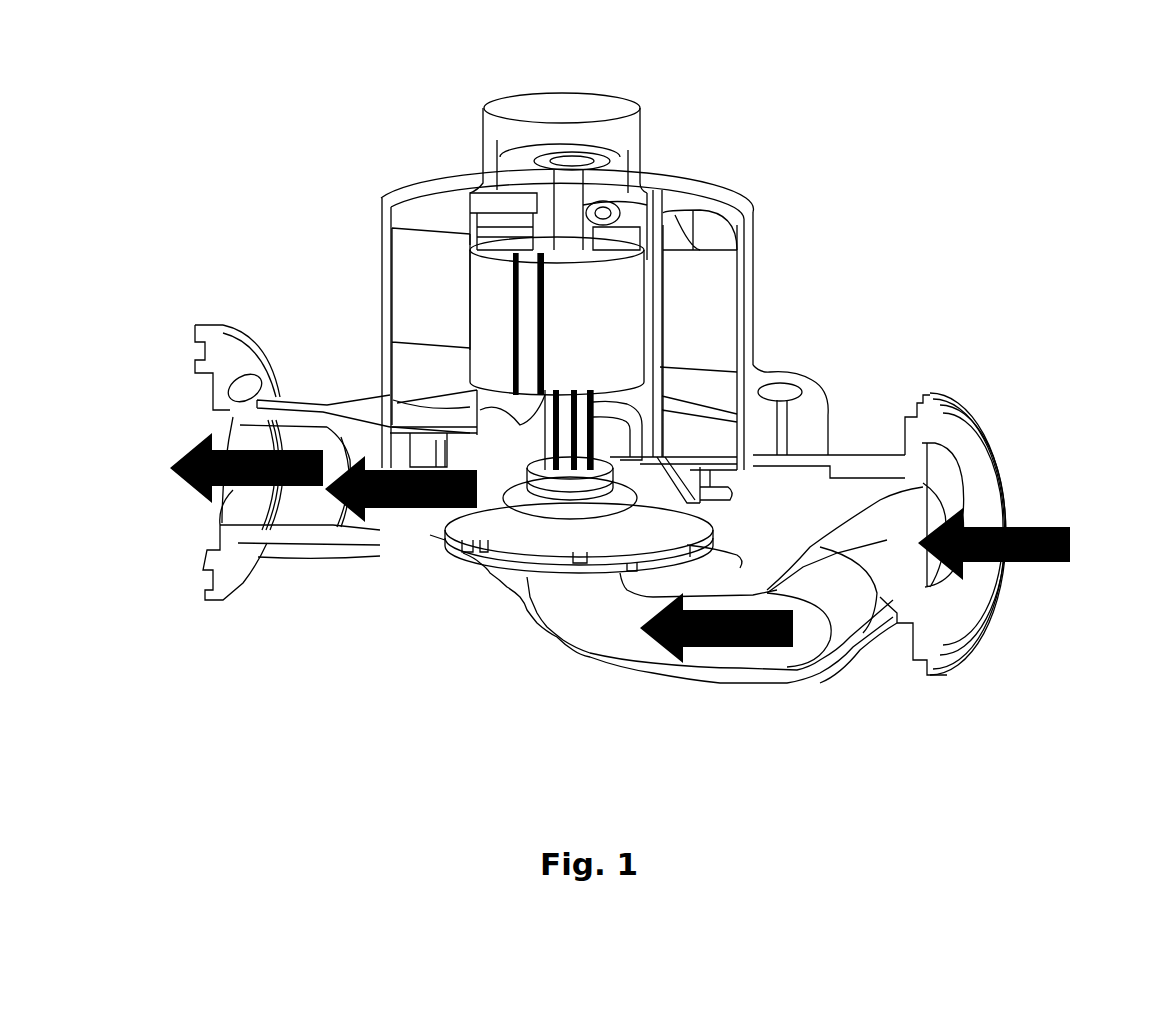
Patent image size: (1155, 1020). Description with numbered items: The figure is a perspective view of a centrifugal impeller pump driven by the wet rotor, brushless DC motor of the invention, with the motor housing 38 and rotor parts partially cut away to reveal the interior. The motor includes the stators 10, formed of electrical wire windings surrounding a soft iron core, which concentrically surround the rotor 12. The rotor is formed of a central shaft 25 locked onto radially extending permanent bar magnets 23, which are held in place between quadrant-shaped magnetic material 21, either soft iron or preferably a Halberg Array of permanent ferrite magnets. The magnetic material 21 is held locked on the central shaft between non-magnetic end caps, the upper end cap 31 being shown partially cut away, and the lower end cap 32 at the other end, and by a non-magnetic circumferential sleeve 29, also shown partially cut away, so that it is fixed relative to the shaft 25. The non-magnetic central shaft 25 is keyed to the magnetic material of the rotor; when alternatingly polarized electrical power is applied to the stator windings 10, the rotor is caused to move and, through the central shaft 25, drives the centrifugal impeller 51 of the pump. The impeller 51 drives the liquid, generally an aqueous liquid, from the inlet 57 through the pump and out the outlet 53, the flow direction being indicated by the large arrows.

The stators 10 is at (564, 333).
The rotor 12 is at (473, 316).
The quadrant-shaped magnetic material 21 is at (467, 357).
The permanent bar magnets 23 is at (442, 228).
The central shaft 25 is at (572, 197).
The non-magnetic circumferential sleeve 29 is at (659, 215).
The non-magnetic end cap 31 is at (482, 167).
The lower end cap 32 is at (610, 437).
The motor housing 38 is at (764, 306).
The centrifugal impeller 51 is at (463, 540).
The outlet 53 is at (368, 547).
The inlet 57 is at (962, 469).